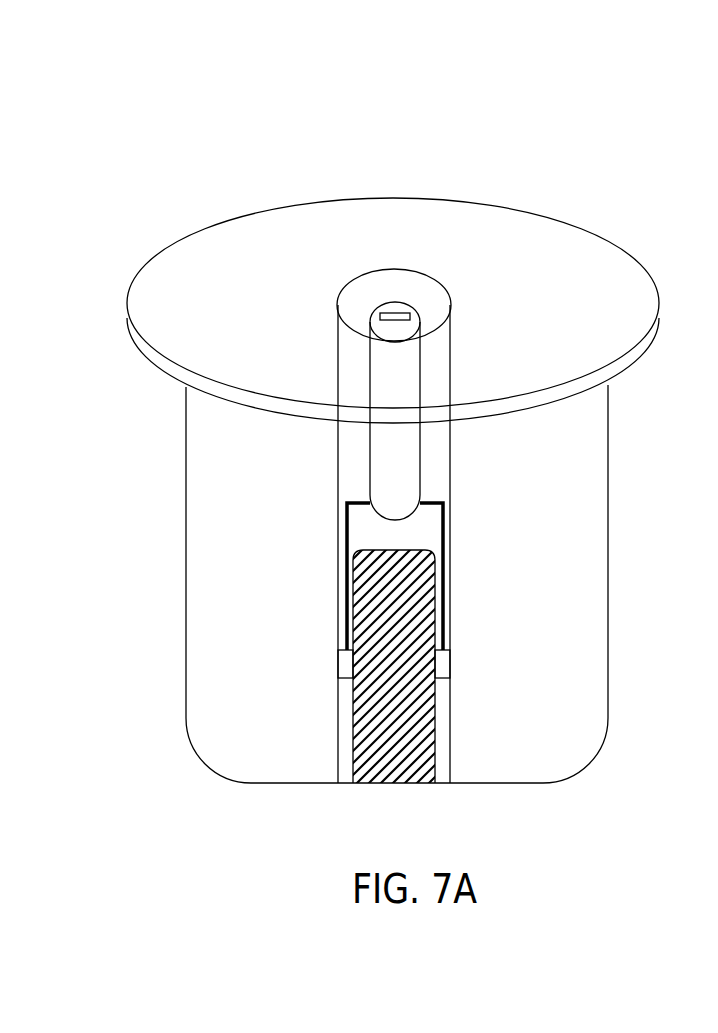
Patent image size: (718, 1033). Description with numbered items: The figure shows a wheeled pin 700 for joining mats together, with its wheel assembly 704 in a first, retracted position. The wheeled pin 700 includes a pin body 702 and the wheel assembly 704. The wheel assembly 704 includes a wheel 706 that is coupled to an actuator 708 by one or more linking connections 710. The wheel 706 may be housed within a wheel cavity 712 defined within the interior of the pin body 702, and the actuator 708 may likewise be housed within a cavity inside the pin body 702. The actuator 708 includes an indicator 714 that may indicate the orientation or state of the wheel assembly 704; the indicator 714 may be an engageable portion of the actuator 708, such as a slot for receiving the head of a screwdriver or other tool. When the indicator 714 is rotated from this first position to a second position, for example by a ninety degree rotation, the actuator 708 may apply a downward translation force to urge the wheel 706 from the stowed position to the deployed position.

The wheeled pin 700 is at (180, 116).
The pin body 702 is at (608, 502).
The wheel assembly 704 is at (368, 256).
The wheel 706 is at (410, 765).
The actuator 708 is at (417, 312).
The linking connections 710 is at (445, 519).
The wheel cavity 712 is at (350, 784).
The indicator 714 is at (384, 278).